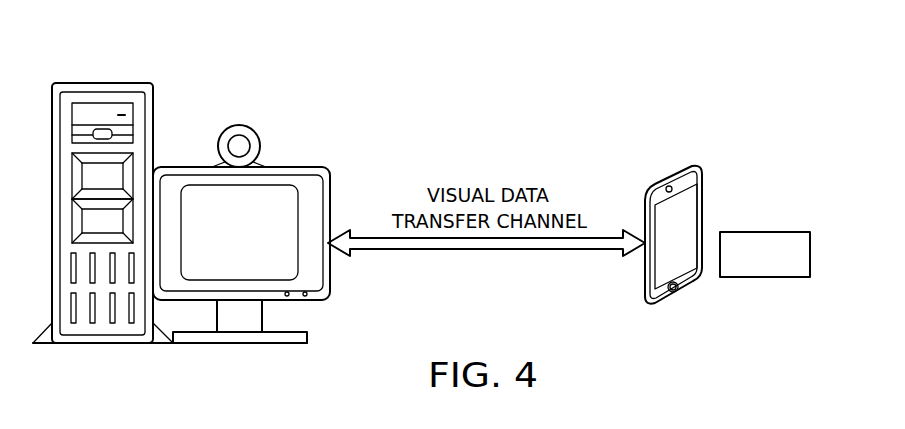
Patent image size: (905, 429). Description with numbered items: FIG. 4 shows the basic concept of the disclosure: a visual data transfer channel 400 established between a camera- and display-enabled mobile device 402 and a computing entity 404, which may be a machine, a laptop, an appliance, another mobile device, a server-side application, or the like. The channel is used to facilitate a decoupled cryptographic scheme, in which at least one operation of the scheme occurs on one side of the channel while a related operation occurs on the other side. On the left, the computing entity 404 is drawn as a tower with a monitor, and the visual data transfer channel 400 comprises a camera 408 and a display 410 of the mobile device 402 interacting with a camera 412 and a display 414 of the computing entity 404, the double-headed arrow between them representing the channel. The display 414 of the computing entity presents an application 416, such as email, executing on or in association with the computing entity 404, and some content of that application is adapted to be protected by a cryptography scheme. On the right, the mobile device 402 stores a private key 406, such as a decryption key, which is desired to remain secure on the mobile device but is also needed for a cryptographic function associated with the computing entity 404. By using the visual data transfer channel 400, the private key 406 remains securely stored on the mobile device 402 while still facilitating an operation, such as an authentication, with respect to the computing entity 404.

The visual data transfer channel 400 is at (375, 90).
The mobile device 402 is at (793, 163).
The computing entity 404 is at (101, 82).
The private key 406 is at (770, 278).
The camera 408 is at (672, 184).
The display 410 is at (689, 205).
The camera 412 is at (237, 124).
The display 414 is at (304, 184).
The application 416 is at (260, 249).